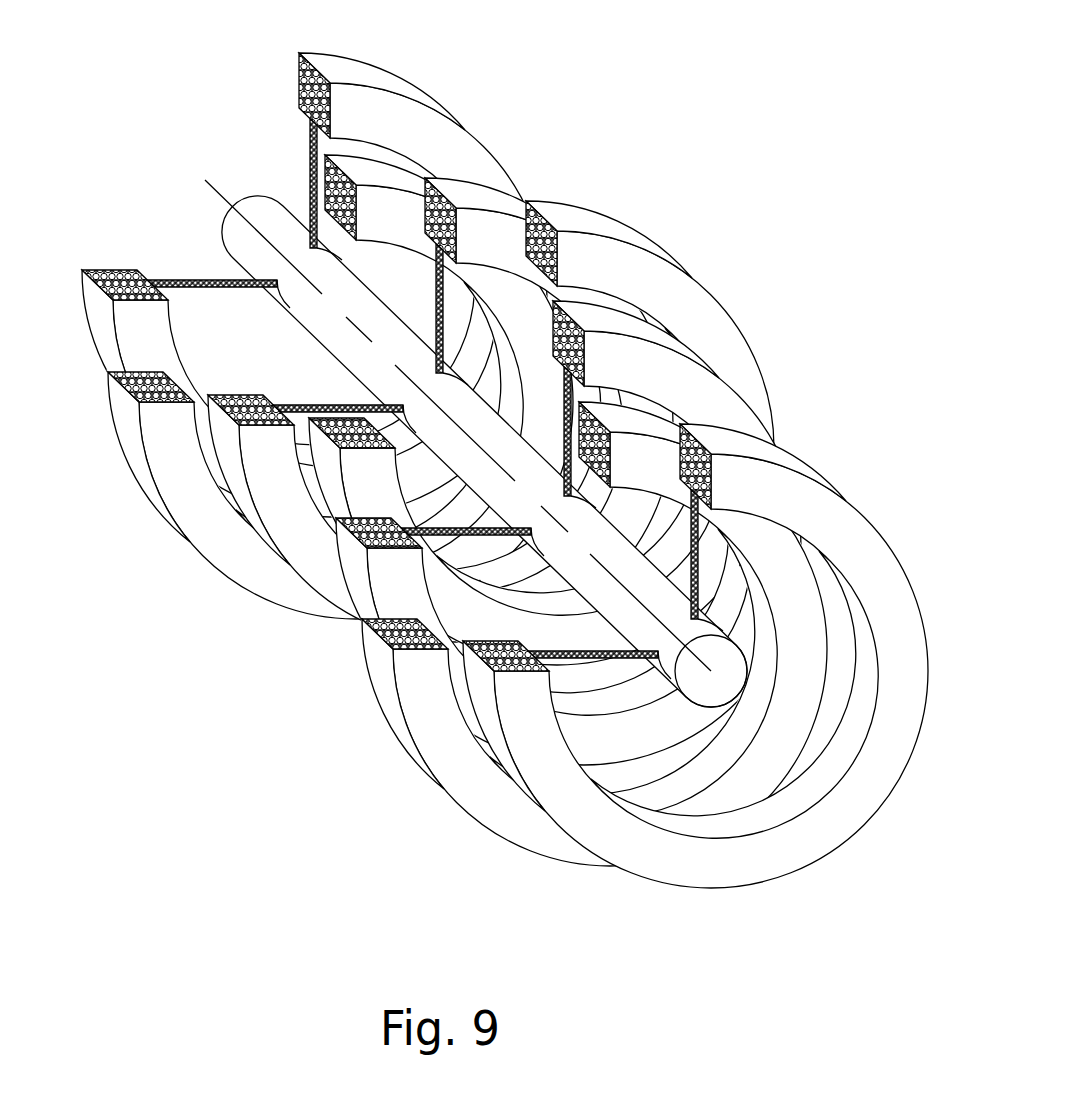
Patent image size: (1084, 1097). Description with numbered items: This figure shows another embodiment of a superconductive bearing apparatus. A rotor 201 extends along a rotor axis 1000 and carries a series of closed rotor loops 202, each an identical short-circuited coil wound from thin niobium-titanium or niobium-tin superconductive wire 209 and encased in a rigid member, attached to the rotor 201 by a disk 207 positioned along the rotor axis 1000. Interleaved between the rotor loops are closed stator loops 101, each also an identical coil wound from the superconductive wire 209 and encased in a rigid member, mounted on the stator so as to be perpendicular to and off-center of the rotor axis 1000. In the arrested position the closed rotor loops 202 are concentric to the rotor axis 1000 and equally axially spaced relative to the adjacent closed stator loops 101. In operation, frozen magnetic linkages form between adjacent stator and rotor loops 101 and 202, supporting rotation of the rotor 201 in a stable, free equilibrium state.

The rotor axis 1000 is at (503, 486).
The rotor 201 is at (257, 198).
The closed rotor loop 202 is at (693, 870).
The closed stator loop 101 is at (413, 755).
The superconductive wire 209 is at (345, 540).
The disk 207 is at (594, 663).